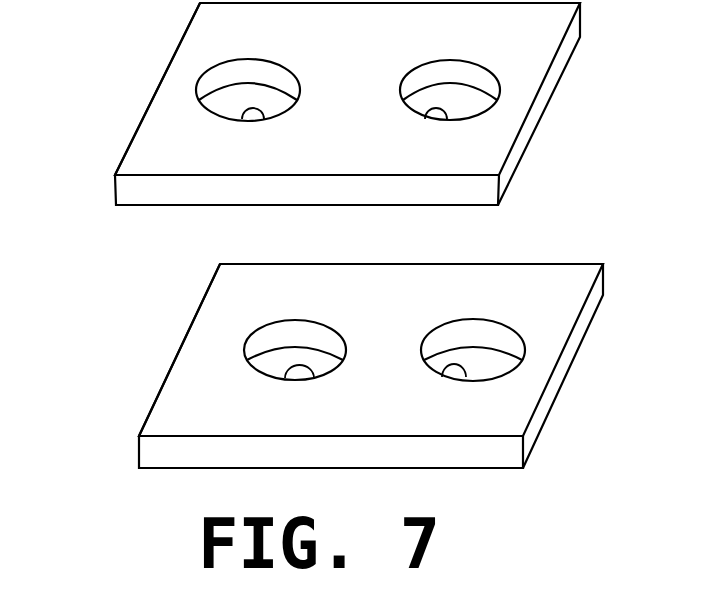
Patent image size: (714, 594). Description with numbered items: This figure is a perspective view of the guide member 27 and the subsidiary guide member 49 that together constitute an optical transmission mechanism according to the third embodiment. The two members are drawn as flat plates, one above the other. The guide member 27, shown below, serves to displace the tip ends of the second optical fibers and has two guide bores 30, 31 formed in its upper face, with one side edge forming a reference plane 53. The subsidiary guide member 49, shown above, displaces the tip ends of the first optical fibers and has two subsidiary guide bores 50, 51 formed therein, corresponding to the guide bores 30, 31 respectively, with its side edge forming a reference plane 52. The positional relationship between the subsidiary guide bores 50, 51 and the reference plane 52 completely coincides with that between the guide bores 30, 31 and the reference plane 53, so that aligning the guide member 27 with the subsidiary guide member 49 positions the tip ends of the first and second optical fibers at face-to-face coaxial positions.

The subsidiary guide member 49 is at (540, 106).
The reference plane 52 is at (150, 108).
The subsidiary guide bore 50 is at (261, 116).
The subsidiary guide bore 51 is at (424, 118).
The guide member 27 is at (563, 365).
The reference plane 53 is at (177, 358).
The guide bore 30 is at (313, 377).
The guide bore 31 is at (442, 376).